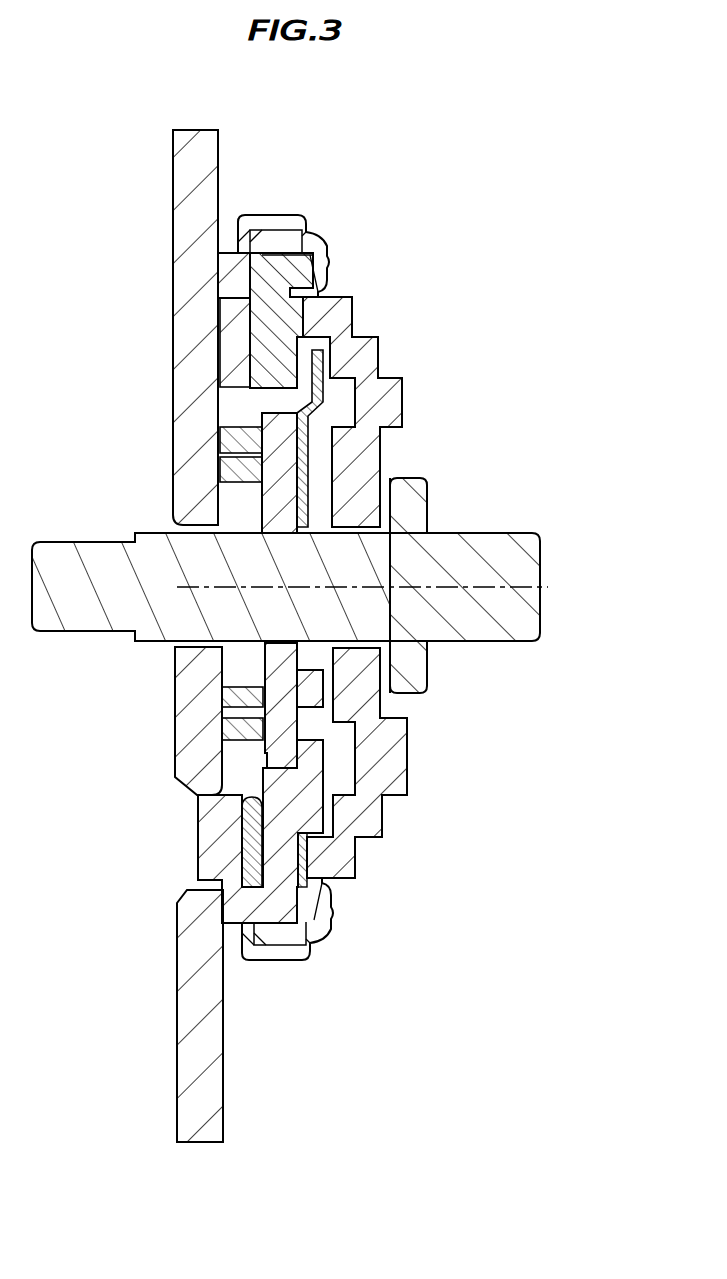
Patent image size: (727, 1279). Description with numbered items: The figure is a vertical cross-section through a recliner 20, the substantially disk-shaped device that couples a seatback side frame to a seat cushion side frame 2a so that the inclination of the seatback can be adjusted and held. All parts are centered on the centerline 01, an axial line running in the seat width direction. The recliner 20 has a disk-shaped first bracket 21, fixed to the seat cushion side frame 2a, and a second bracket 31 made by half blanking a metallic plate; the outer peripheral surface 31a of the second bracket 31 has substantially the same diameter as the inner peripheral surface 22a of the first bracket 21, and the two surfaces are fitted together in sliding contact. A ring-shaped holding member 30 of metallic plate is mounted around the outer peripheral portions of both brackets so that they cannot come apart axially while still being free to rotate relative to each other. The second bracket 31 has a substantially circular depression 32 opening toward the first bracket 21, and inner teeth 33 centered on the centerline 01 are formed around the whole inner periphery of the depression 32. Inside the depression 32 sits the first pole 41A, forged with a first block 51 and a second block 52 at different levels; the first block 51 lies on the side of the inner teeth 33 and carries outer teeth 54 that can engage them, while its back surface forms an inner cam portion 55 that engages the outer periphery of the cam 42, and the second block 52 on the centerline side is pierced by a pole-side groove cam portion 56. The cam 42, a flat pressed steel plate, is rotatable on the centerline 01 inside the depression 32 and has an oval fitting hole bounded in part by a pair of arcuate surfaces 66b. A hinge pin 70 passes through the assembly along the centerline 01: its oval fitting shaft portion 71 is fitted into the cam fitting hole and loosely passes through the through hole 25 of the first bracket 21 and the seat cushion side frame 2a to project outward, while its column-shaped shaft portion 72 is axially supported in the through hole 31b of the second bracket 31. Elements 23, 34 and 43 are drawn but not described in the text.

The seat cushion side frame 2a is at (185, 1015).
The recliner 20 is at (362, 288).
The first bracket 21 is at (227, 268).
The inner peripheral surface 22a is at (267, 273).
The outer peripheral portion 23 is at (352, 312).
The through hole 25 is at (230, 728).
The holding member 30 is at (305, 218).
The second bracket 31 is at (380, 345).
The outer peripheral surface 31a is at (286, 258).
The through hole 31b is at (350, 641).
The depression 32 is at (220, 328).
The inner teeth 33 is at (250, 857).
The sleeve 34 is at (297, 370).
The first pole 41A is at (317, 773).
The cam 42 is at (275, 665).
The engaging portion 43 is at (362, 397).
The first block 51 is at (310, 857).
The second block 52 is at (318, 812).
The outer teeth 54 is at (325, 893).
The inner cam portion 55 is at (228, 760).
The pole-side groove cam portion 56 is at (360, 718).
The arcuate surfaces 66b is at (283, 534).
The hinge pin 70 is at (480, 542).
The fitting shaft portion 71 is at (200, 545).
The shaft portion 72 is at (405, 522).
The centerline 01 is at (497, 587).